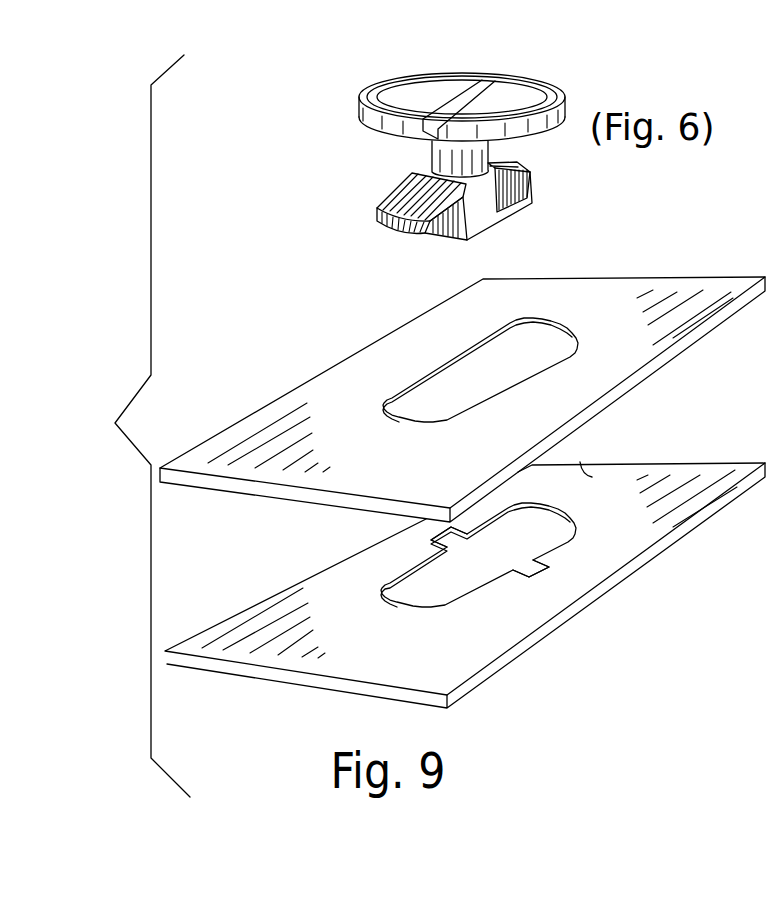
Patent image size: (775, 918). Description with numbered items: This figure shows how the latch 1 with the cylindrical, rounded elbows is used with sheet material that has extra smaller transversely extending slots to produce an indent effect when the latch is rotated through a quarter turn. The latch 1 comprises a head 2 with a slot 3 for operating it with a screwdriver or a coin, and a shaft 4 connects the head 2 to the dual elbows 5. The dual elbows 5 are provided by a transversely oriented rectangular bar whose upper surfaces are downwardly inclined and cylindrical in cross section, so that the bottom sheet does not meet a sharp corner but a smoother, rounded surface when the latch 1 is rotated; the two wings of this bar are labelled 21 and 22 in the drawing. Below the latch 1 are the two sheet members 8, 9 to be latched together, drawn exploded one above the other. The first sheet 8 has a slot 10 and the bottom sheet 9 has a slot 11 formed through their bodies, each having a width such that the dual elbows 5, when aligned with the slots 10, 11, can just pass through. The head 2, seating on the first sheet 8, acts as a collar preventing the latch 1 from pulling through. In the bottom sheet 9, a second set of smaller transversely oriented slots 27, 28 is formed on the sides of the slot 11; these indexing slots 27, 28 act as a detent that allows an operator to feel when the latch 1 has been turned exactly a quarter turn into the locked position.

The latch 1 is at (413, 83).
The head 2 is at (527, 92).
The slot 3 is at (480, 88).
The shaft 4 is at (432, 148).
The dual elbows 5 is at (478, 243).
The wing of base 21 is at (408, 192).
The wing of base 22 is at (508, 163).
The first sheet member 8 is at (612, 290).
The bottom sheet member 9 is at (670, 480).
The slot 10 is at (442, 400).
The slot 11 is at (423, 597).
The transverse indexing slot 27 is at (465, 542).
The transverse indexing slot 28 is at (510, 560).